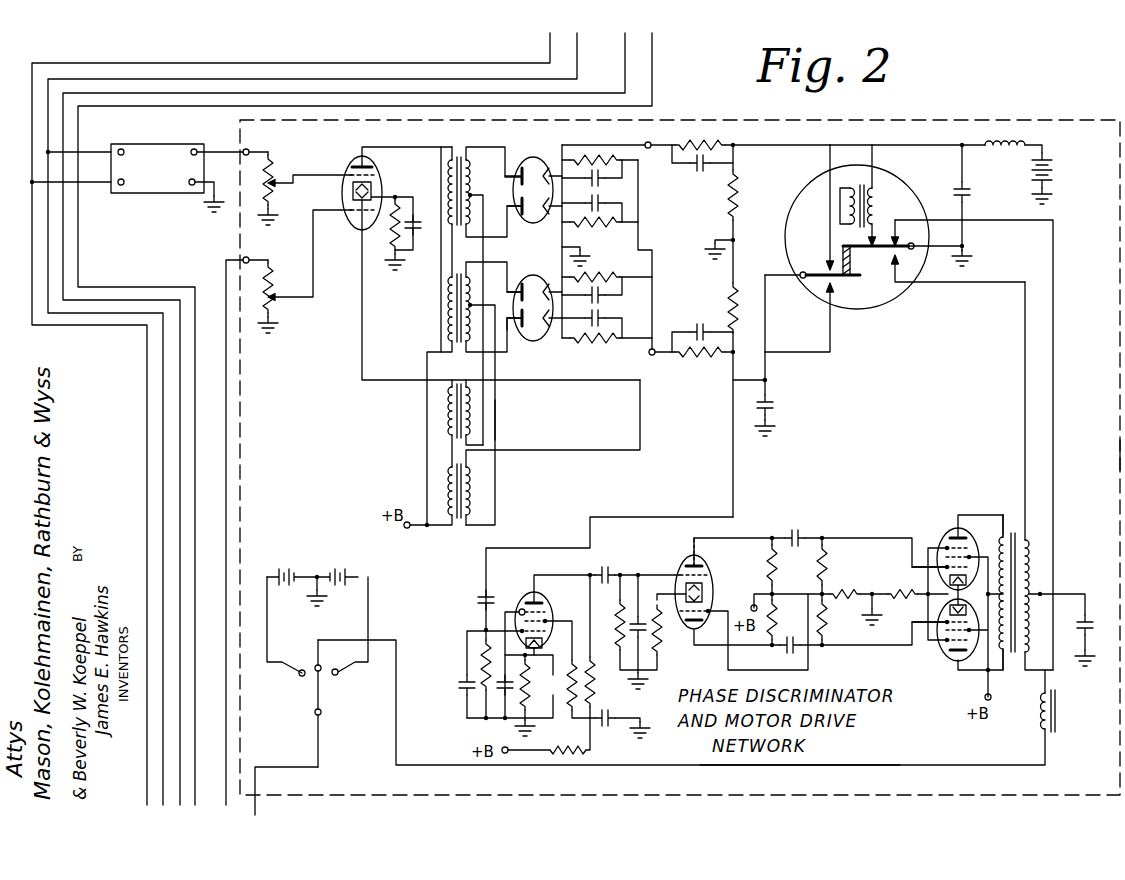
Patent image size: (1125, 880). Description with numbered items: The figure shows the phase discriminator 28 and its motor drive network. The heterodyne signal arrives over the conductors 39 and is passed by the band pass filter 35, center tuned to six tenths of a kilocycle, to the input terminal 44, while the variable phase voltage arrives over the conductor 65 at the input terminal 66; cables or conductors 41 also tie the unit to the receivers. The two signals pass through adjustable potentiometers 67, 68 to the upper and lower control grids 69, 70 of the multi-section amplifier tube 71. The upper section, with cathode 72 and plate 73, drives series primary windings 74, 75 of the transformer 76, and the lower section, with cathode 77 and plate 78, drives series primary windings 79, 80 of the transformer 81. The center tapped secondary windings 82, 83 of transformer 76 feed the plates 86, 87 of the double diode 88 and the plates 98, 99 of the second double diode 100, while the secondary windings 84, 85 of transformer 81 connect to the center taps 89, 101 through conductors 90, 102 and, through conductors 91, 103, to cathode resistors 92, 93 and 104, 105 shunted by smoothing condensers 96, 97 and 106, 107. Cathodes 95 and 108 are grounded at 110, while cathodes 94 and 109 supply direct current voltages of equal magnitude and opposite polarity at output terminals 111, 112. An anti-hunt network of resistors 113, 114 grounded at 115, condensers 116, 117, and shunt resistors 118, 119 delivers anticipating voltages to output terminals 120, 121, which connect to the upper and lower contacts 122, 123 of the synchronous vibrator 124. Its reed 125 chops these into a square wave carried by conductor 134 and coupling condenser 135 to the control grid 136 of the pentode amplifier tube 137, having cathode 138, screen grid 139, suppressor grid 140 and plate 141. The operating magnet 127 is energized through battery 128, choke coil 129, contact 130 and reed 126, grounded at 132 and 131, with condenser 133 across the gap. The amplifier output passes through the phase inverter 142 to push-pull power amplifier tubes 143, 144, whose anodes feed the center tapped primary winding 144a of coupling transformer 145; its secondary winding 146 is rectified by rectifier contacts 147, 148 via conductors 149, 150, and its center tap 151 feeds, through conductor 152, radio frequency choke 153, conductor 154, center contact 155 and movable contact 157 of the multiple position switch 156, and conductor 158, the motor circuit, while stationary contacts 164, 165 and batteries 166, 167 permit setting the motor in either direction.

The phase discriminator 28 is at (1118, 456).
The band pass filter 35 is at (158, 193).
The conductors 39 is at (548, 38).
The cables or conductors 41 is at (97, 236).
The input terminal 44 is at (250, 151).
The conductor 65 is at (242, 444).
The input terminal 66 is at (250, 260).
The adjustable potentiometer 67 is at (277, 177).
The adjustable potentiometer 68 is at (277, 285).
The upper control grid 69 is at (377, 160).
The lower control grid 70 is at (362, 243).
The multi-section triode connected amplifier tube 71 is at (377, 188).
The cathode 72 is at (350, 175).
The anode or plate 73 is at (358, 162).
The primary winding 74 is at (447, 195).
The primary winding 75 is at (448, 305).
The transformer 76 is at (466, 284).
The cathode 77 is at (353, 195).
The anode or plate 78 is at (354, 214).
The primary winding 79 is at (445, 415).
The primary winding 80 is at (445, 478).
The transformer 81 is at (459, 414).
The center tapped secondary winding 82 is at (468, 173).
The center tapped secondary winding 83 is at (468, 278).
The secondary winding 84 is at (477, 411).
The secondary winding 85 is at (475, 485).
The upper plate 86 is at (525, 159).
The lower plate 87 is at (523, 214).
The double diode 88 is at (530, 161).
The center tap 89 is at (470, 195).
The conductor 90 is at (468, 242).
The conductor 91 is at (601, 369).
The cathode resistor 92 is at (616, 162).
The cathode resistor 93 is at (628, 233).
The upper cathode 94 is at (551, 165).
The lower cathode 95 is at (547, 214).
The smoothing condenser 96 is at (598, 179).
The smoothing condenser 97 is at (590, 203).
The upper plate 98 is at (524, 285).
The lower plate 99 is at (507, 318).
The second double diode 100 is at (546, 329).
The center tap 101 is at (471, 305).
The conductor 102 is at (497, 422).
The conductor 103 is at (560, 450).
The cathode resistor 104 is at (590, 275).
The cathode resistor 105 is at (592, 342).
The smoothing condenser 106 is at (601, 295).
The smoothing condenser 107 is at (590, 318).
The cathode 108 is at (538, 279).
The cathode 109 is at (520, 332).
The ground connection 110 is at (582, 254).
The output terminal 111 is at (650, 143).
The output terminal 112 is at (653, 356).
The resistor 113 is at (730, 188).
The resistor 114 is at (727, 306).
The ground connection 115 is at (710, 248).
The condenser 116 is at (698, 166).
The condenser 117 is at (694, 330).
The resistor 118 is at (702, 141).
The resistor 119 is at (706, 354).
The output terminal 120 is at (746, 120).
The output terminal 121 is at (741, 425).
The upper contact 122 is at (822, 260).
The lower contact 123 is at (822, 286).
The synchronous vibrator 124 is at (863, 309).
The reed 125 is at (850, 279).
The reed 126 is at (879, 252).
The operating magnet 127 is at (871, 197).
The battery 128 is at (1048, 172).
The choke coil 129 is at (1020, 141).
The contact 130 is at (875, 231).
The ground connection 131 is at (963, 252).
The ground connection 132 is at (1052, 195).
The condenser 133 is at (965, 191).
The conductor 134 is at (768, 382).
The series coupling condenser 135 is at (480, 598).
The control grid 136 is at (530, 631).
The amplifier tube 137 is at (527, 599).
The cathode 138 is at (529, 660).
The screen grid 139 is at (553, 620).
The suppressor grid 140 is at (538, 601).
The plate or anode 141 is at (530, 584).
The phase inverter 142 is at (677, 573).
The power amplifier tube 143 is at (937, 541).
The power amplifier tube 144 is at (935, 647).
The center tapped primary winding 144a is at (1008, 515).
The coupling transformer 145 is at (1024, 575).
The secondary winding 146 is at (1029, 556).
The rectifier contact 147 is at (911, 234).
The rectifier contact 148 is at (959, 268).
The conductor 149 is at (1054, 416).
The conductor 150 is at (1023, 406).
The center tap 151 is at (1043, 596).
The conductor 152 is at (1048, 677).
The radio frequency choke 153 is at (1042, 717).
The conductor 154 is at (806, 769).
The center contact 155 is at (320, 667).
The multiple position switch 156 is at (312, 605).
The movable contact 157 is at (320, 713).
The conductor 158 is at (268, 767).
The stationary contact 164 is at (298, 677).
The stationary contact 165 is at (337, 676).
The battery 166 is at (291, 573).
The battery 167 is at (340, 576).